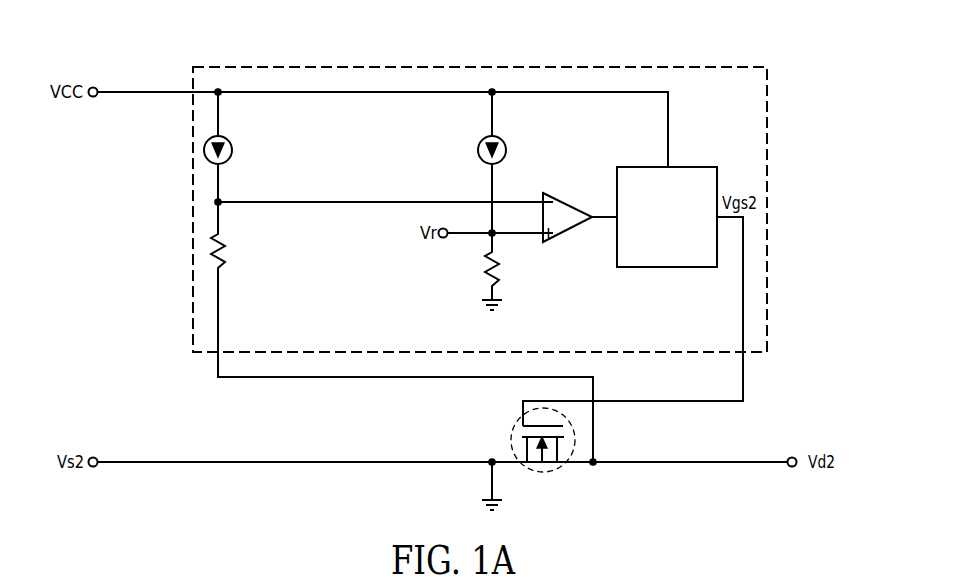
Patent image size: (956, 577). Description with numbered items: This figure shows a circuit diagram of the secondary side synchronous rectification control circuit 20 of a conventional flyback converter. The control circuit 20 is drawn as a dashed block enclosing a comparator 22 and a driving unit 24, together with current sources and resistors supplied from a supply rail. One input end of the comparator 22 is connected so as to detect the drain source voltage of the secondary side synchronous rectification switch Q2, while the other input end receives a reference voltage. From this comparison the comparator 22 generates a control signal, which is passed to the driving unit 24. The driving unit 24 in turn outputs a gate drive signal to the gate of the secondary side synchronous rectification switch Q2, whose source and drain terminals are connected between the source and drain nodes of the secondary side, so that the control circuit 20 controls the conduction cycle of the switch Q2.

The secondary side synchronous rectification control circuit 20 is at (745, 65).
The comparator 22 is at (558, 188).
The driving unit 24 is at (697, 167).
The secondary side synchronous rectification switch Q2 is at (514, 428).